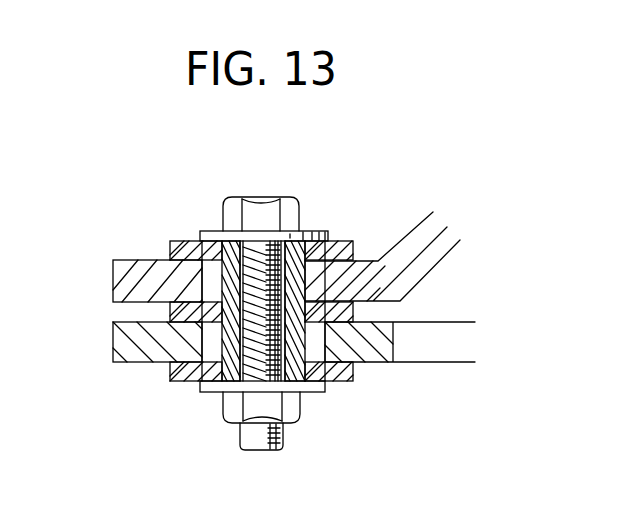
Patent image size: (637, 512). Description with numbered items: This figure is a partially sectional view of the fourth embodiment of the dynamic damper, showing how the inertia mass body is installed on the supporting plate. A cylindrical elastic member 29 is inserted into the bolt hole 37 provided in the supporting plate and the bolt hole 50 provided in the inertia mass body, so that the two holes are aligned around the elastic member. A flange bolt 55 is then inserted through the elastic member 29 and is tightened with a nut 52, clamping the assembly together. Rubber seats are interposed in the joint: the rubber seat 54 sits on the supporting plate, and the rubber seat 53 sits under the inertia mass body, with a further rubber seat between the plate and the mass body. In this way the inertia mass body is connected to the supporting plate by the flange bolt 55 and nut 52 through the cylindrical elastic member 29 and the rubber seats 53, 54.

The cylindrical elastic member 29 is at (202, 242).
The bolt hole 37 is at (208, 277).
The bolt hole 50 is at (208, 340).
The nut 52 is at (292, 402).
The rubber seat 53 is at (172, 366).
The rubber seat 54 is at (345, 242).
The flange bolt 55 is at (296, 212).